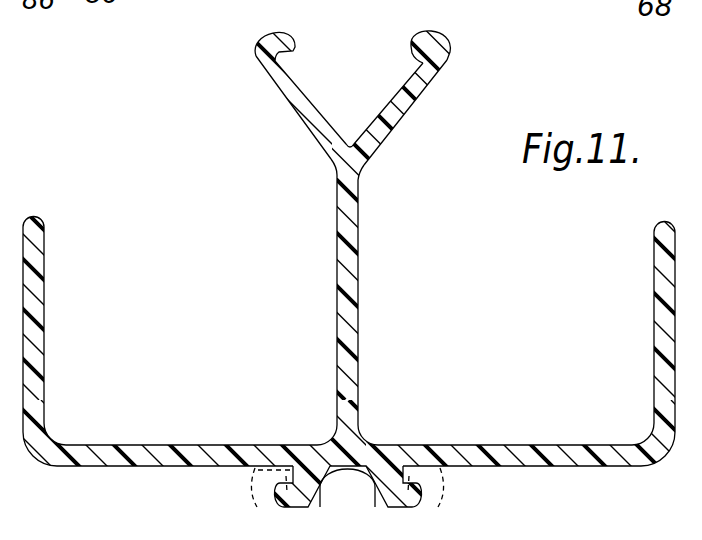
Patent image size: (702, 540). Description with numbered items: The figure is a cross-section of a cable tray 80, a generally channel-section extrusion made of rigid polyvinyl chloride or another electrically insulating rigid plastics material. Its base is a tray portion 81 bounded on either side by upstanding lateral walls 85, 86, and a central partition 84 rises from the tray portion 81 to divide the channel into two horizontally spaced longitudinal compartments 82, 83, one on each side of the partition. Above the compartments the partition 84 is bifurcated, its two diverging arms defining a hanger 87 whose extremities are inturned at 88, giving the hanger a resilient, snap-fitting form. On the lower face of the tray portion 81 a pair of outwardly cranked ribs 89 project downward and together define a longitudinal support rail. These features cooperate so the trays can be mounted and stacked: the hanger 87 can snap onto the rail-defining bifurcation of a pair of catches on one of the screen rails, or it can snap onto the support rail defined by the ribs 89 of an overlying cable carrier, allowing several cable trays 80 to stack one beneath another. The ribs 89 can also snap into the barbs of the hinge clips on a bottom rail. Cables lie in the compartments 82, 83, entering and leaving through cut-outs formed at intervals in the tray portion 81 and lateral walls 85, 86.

The cable tray 80 is at (474, 217).
The tray portion 81 is at (543, 444).
The longitudinal compartment 82 is at (460, 292).
The longitudinal compartment 83 is at (224, 293).
The partition 84 is at (352, 240).
The lateral wall 85 is at (36, 258).
The lateral wall 86 is at (657, 253).
The hanger 87 is at (404, 112).
The inturned extremities 88 is at (280, 33).
The outwardly cranked ribs 89 is at (388, 497).